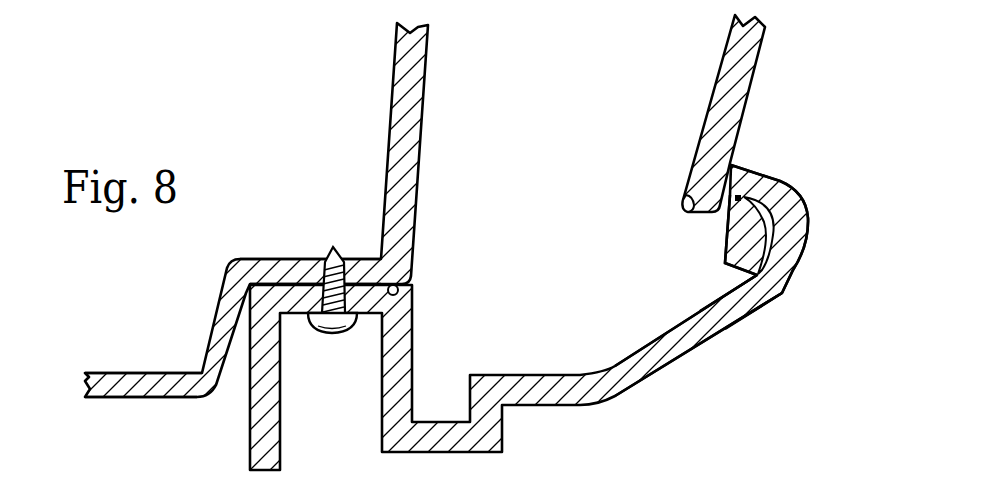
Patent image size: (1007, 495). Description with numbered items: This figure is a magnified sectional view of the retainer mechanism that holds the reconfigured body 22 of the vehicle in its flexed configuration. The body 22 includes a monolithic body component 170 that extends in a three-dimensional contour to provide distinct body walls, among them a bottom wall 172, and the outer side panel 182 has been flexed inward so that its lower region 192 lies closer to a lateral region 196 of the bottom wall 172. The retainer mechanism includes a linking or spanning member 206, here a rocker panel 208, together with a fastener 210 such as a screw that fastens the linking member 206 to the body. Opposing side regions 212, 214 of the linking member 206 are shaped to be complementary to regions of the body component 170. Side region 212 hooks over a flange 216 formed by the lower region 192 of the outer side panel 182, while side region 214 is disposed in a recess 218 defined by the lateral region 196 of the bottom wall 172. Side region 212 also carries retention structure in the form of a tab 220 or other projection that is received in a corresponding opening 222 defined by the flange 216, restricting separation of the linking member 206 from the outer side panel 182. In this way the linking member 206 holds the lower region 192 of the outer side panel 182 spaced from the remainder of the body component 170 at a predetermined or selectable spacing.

The body 22 is at (256, 228).
The body component 170 is at (344, 192).
The bottom wall 172 is at (160, 400).
The outer side panel 182 is at (726, 113).
The lower region of outer side panel 192 is at (745, 115).
The lateral region of bottom wall 196 is at (262, 261).
The linking member 206 is at (701, 357).
The rocker panel 208 is at (757, 305).
The fastener 210 is at (333, 333).
The side region of linking member 212 is at (810, 210).
The side region of linking member 214 is at (250, 417).
The flange 216 is at (725, 252).
The recess 218 is at (404, 290).
The tab 220 is at (689, 194).
The opening 222 is at (741, 198).